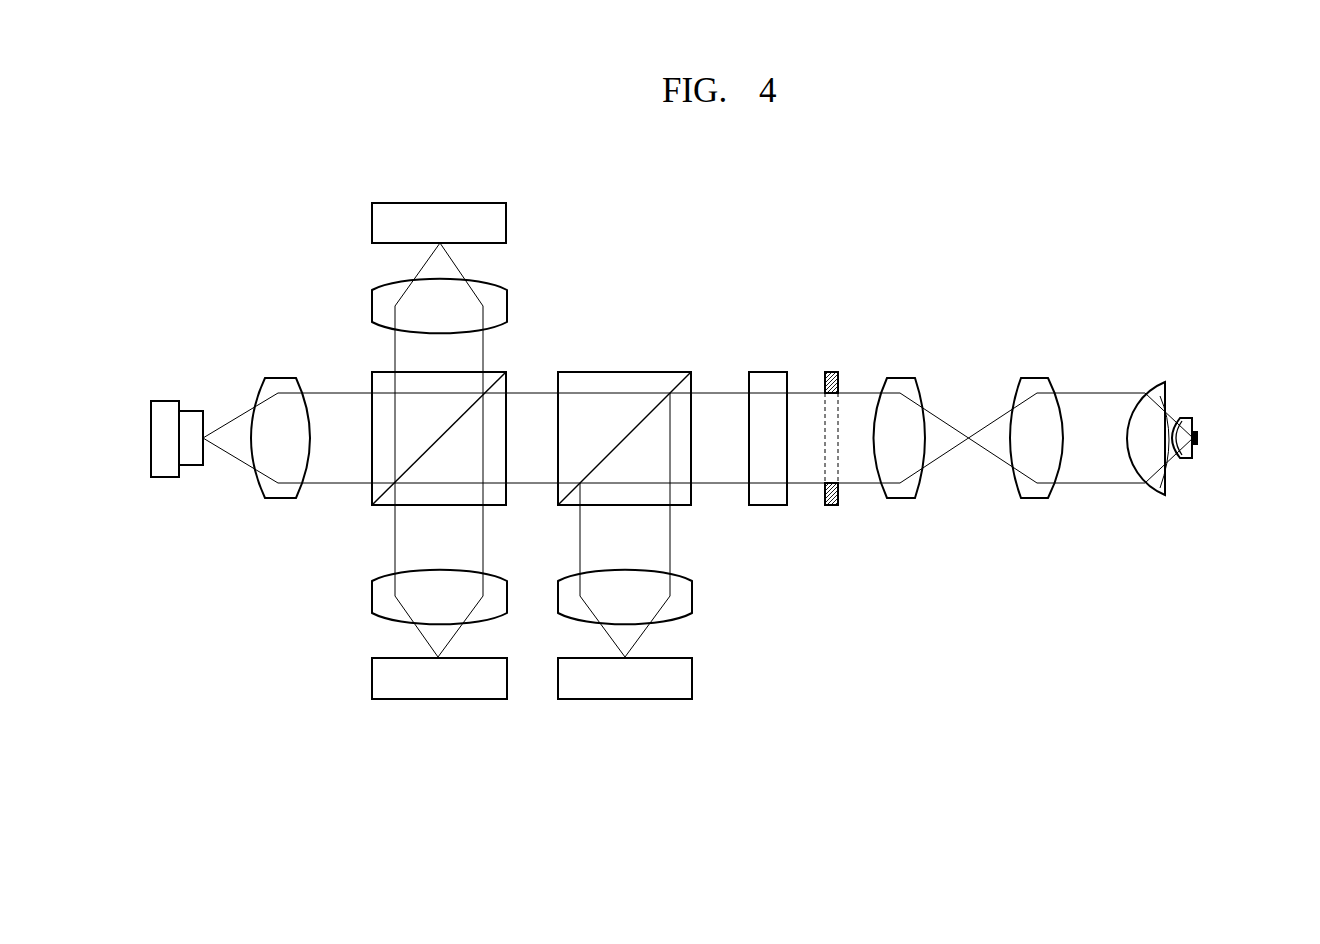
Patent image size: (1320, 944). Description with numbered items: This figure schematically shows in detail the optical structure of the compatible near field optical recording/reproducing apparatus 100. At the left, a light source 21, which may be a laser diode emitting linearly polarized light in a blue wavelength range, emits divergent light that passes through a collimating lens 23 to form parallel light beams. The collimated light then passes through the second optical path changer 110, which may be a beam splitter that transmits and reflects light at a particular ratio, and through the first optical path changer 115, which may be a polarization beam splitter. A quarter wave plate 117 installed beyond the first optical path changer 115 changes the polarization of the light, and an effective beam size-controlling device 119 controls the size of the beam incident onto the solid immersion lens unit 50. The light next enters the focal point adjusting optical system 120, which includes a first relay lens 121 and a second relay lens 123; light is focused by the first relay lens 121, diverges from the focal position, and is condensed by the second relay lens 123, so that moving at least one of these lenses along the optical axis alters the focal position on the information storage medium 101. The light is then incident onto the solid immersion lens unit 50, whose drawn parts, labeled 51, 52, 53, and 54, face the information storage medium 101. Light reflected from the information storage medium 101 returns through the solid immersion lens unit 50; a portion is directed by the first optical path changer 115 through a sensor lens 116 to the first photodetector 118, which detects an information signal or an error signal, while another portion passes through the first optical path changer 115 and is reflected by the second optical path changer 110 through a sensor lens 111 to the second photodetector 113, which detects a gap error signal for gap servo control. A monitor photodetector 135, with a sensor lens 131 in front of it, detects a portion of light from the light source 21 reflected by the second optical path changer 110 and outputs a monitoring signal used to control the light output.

The compatible near field optical recording/reproducing apparatus 100 is at (948, 642).
The light source 21 is at (190, 417).
The collimating lens 23 is at (283, 378).
The second optical path changer 110 is at (383, 372).
The monitor photodetector 135 is at (506, 222).
The sensor lens 131 is at (506, 308).
The sensor lens 111 is at (372, 595).
The second photodetector 113 is at (372, 683).
The first optical path changer 115 is at (656, 372).
The sensor lens 116 is at (692, 595).
The first photodetector 118 is at (692, 683).
The quarter wave plate 117 is at (767, 372).
The effective beam size-controlling device 119 is at (832, 372).
The focal point adjusting optical system 120 is at (887, 305).
The first relay lens 121 is at (898, 378).
The second relay lens 123 is at (1037, 378).
The solid immersion lens unit 50 is at (1191, 392).
The cornea 51 is at (1157, 388).
The crystalline lens unit 52 is at (1162, 536).
The crystalline lens 53 is at (1190, 460).
The lens capsule 54 is at (1172, 462).
The information storage medium 101 is at (1198, 438).